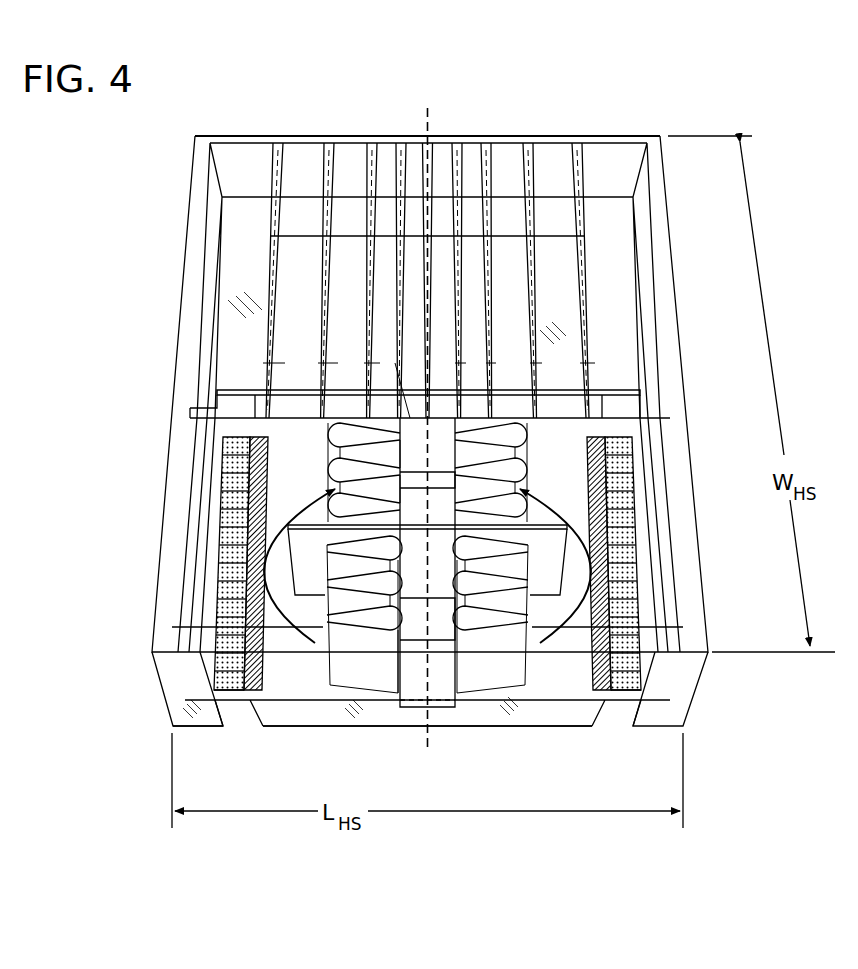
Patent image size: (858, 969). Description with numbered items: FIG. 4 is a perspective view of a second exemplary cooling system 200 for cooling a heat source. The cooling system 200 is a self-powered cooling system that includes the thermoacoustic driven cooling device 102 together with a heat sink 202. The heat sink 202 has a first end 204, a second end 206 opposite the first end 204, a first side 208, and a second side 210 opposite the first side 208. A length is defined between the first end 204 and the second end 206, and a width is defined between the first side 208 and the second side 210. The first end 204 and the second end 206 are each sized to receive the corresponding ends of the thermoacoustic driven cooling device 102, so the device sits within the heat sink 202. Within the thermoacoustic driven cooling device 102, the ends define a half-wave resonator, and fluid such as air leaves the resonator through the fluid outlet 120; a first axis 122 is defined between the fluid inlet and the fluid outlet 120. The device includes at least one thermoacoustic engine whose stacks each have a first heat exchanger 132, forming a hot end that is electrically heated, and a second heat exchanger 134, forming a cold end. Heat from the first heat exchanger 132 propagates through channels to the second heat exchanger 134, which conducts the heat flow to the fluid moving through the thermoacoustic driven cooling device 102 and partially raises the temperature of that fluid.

The cooling system 200 is at (698, 78).
The heat sink 202 is at (671, 126).
The first end 204 is at (185, 270).
The second end 206 is at (659, 200).
The first side 208 is at (170, 702).
The second side 210 is at (282, 134).
The thermoacoustic driven cooling device 102 is at (310, 720).
The fluid outlet 120 is at (445, 422).
The first axis 122 is at (431, 740).
The first heat exchanger 132 is at (225, 562).
The second heat exchanger 134 is at (260, 677).